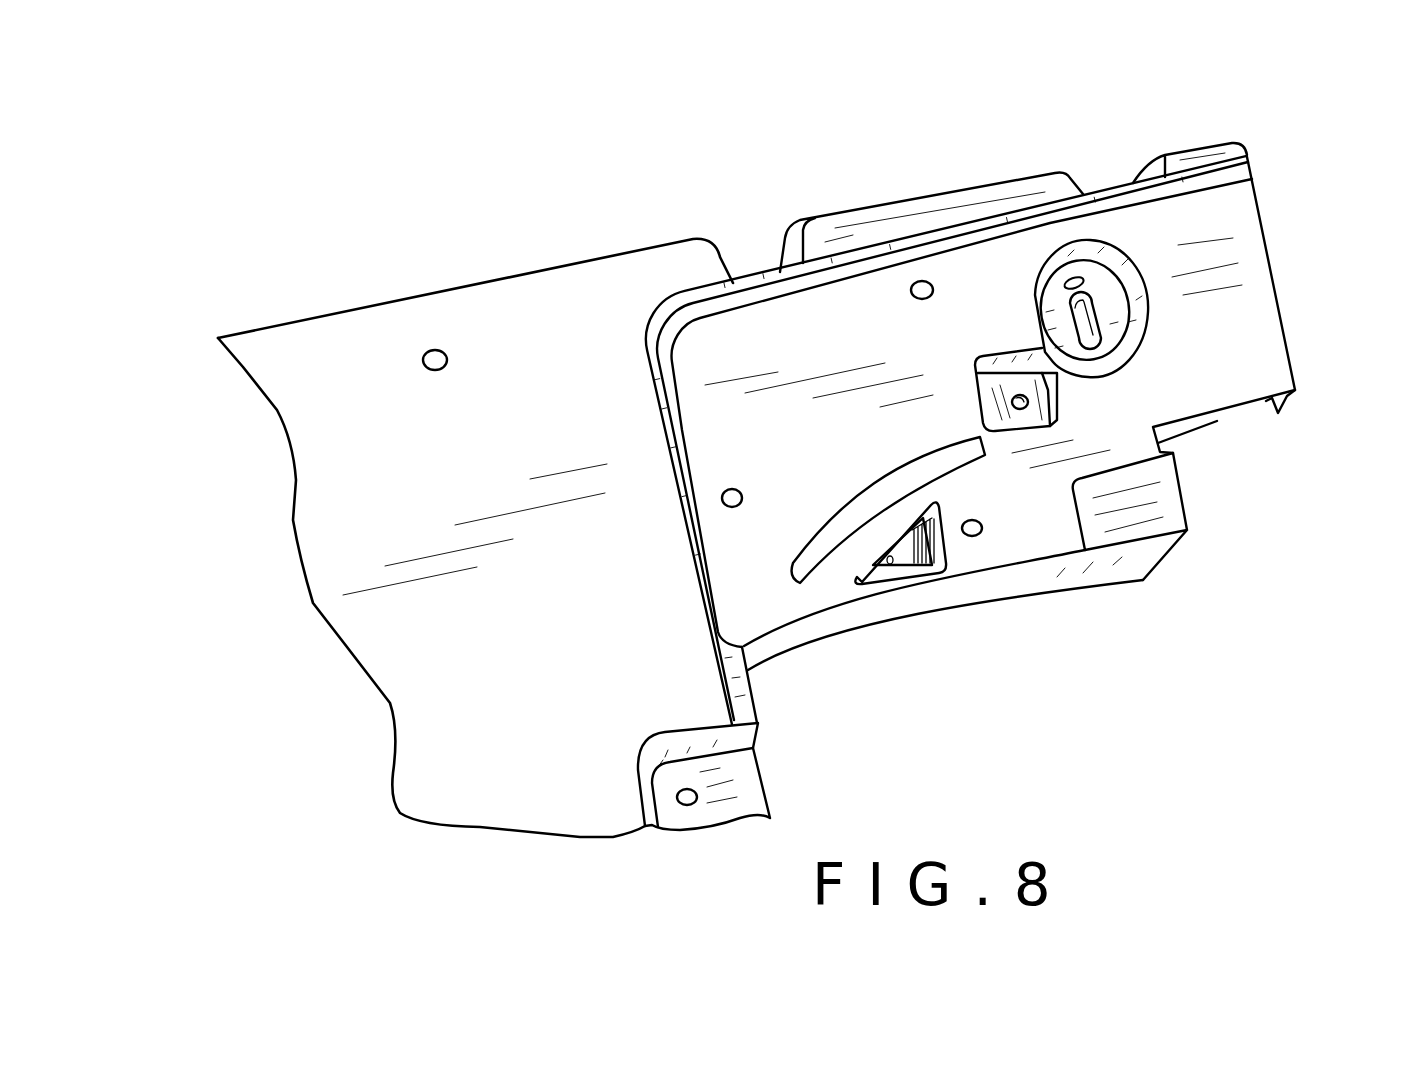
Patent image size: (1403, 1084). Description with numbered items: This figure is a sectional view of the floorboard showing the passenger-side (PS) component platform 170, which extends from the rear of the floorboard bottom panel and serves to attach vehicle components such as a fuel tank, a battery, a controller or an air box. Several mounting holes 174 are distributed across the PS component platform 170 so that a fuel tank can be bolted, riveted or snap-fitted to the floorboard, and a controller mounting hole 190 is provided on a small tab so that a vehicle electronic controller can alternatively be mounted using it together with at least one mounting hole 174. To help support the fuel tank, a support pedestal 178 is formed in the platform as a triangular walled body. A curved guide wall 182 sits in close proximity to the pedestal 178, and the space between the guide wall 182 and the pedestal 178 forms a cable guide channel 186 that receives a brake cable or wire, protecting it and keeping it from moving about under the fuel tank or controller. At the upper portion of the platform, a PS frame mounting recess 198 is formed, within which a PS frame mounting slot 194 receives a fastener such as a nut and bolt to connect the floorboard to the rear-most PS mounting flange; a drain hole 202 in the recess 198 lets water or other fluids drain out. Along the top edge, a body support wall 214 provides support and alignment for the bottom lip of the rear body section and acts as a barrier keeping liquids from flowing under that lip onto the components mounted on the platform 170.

The PS component platform 170 is at (1247, 330).
The mounting holes 174 is at (729, 492).
The support pedestal 178 is at (903, 572).
The guide wall 182 is at (812, 558).
The cable guide channel 186 is at (887, 507).
The controller mounting hole 190 is at (1018, 397).
The PS frame mounting slot 194 is at (1087, 322).
The PS frame mounting recess 198 is at (1104, 356).
The drain hole 202 is at (1085, 280).
The body support wall 214 is at (852, 250).